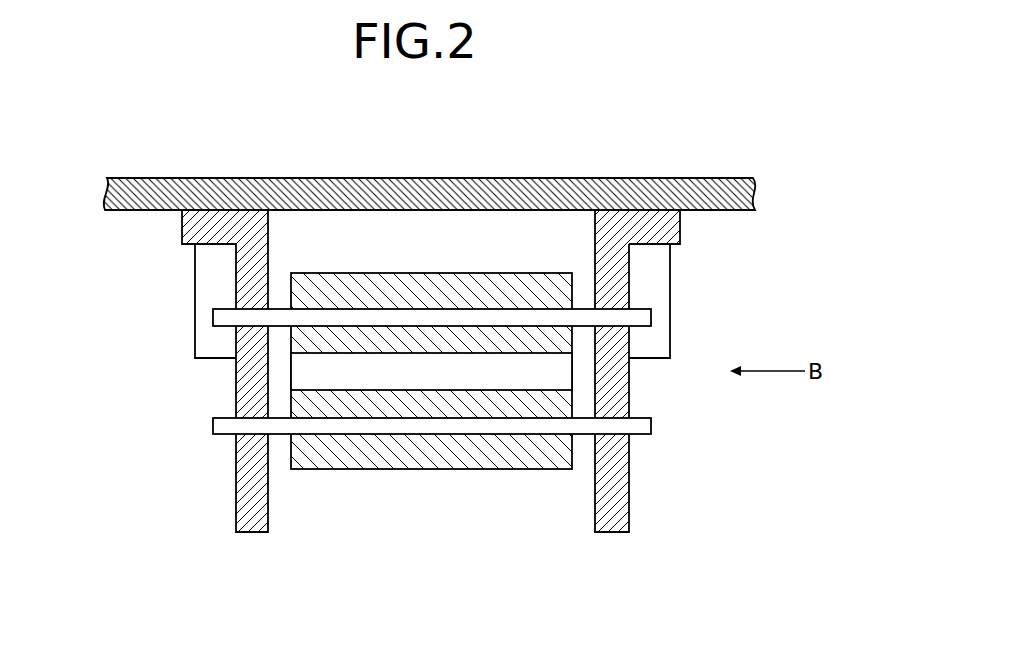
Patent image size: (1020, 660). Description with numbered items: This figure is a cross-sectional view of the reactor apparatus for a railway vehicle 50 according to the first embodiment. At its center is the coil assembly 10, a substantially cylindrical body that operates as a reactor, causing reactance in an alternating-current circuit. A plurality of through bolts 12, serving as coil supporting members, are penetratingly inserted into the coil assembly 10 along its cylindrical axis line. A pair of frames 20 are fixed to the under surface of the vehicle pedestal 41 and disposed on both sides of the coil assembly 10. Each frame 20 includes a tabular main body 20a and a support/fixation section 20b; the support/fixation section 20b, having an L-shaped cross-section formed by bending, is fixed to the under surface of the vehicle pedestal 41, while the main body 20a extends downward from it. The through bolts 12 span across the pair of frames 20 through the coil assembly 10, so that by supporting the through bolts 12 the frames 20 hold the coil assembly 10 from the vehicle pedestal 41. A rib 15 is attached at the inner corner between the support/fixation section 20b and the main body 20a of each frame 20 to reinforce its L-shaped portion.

The vehicle pedestal 41 is at (648, 177).
The reactor apparatus for a railway vehicle 50 is at (445, 247).
The frame 20 is at (430, 371).
The main body 20a is at (236, 483).
The support/fixation section 20b is at (182, 227).
The rib 15 is at (196, 298).
The through bolt 12 is at (650, 308).
The coil assembly 10 is at (432, 470).